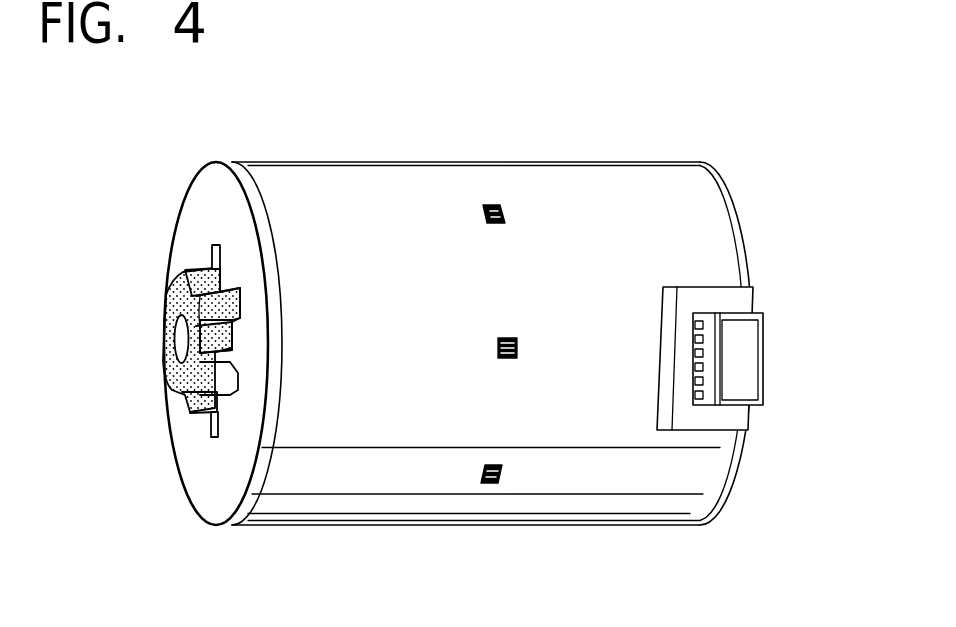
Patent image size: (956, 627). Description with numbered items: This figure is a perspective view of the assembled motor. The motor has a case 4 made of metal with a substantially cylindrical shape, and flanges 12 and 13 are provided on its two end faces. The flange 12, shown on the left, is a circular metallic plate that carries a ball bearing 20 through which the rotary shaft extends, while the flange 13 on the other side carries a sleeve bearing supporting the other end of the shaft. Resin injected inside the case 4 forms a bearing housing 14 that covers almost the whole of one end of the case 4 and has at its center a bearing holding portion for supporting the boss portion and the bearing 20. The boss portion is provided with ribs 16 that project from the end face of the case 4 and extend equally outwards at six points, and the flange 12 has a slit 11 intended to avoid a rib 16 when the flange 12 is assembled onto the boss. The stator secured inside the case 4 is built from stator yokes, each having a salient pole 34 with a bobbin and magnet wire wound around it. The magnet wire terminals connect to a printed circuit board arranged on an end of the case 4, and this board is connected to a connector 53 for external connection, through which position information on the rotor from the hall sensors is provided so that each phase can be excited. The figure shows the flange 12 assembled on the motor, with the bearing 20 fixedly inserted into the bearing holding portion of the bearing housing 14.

The case 4 is at (630, 503).
The slit 11 is at (212, 423).
The flange 12 is at (188, 484).
The flange 13 is at (724, 470).
The bearing housing 14 is at (168, 280).
The ribs 16 is at (200, 270).
The ball bearing 20 is at (230, 338).
The salient pole 34 is at (488, 484).
The connector 53 is at (740, 348).